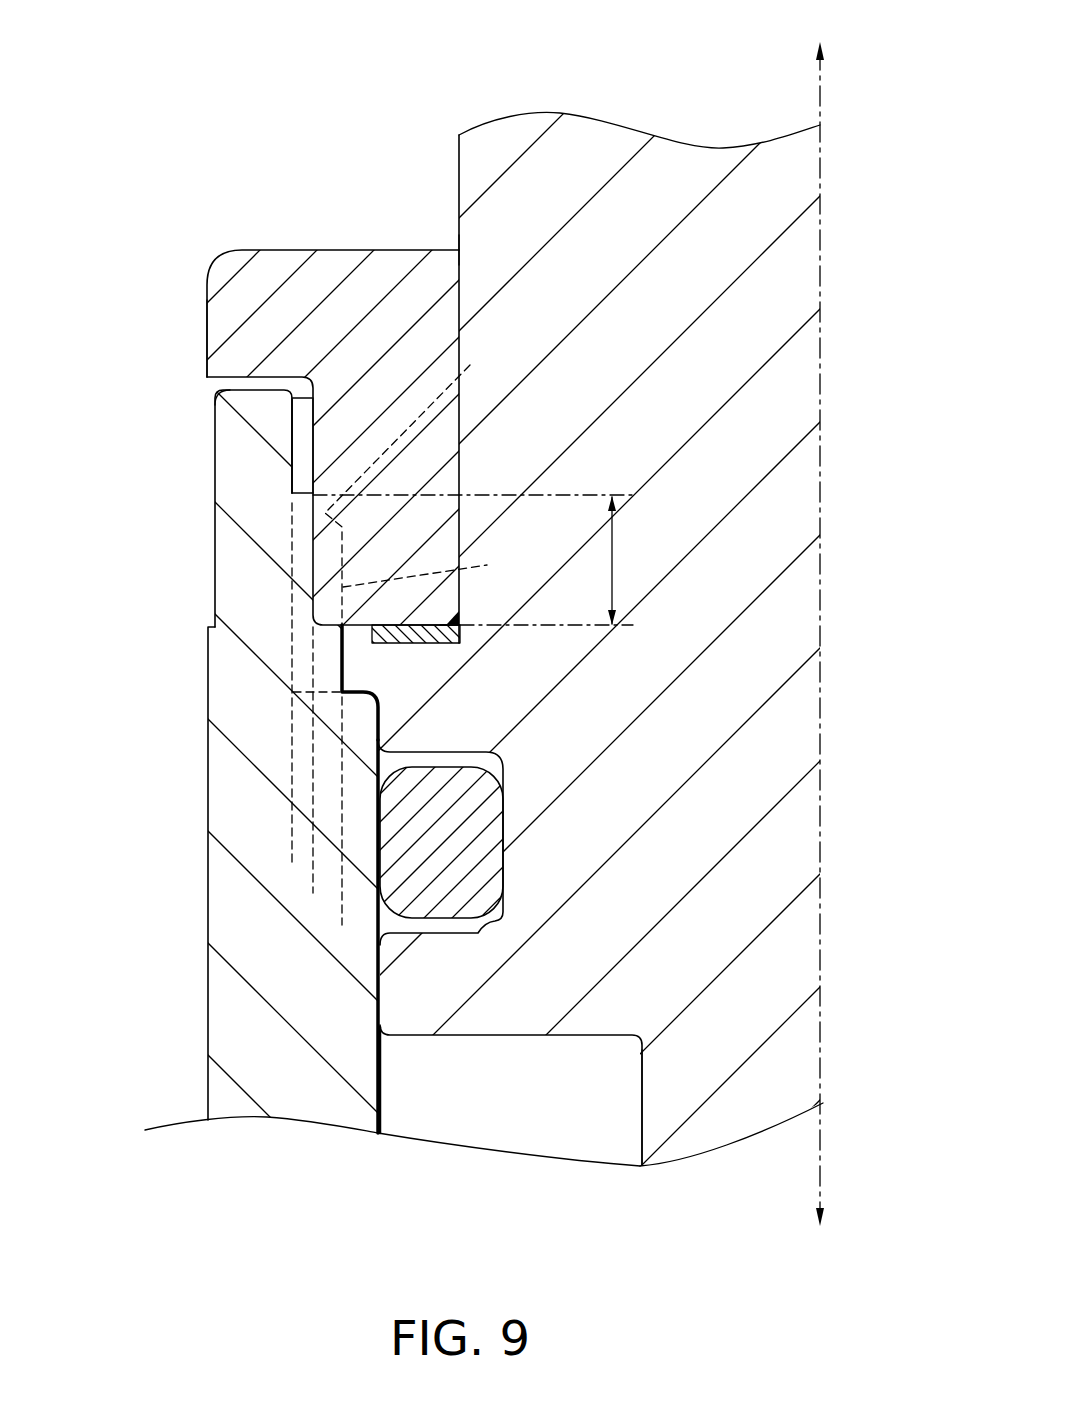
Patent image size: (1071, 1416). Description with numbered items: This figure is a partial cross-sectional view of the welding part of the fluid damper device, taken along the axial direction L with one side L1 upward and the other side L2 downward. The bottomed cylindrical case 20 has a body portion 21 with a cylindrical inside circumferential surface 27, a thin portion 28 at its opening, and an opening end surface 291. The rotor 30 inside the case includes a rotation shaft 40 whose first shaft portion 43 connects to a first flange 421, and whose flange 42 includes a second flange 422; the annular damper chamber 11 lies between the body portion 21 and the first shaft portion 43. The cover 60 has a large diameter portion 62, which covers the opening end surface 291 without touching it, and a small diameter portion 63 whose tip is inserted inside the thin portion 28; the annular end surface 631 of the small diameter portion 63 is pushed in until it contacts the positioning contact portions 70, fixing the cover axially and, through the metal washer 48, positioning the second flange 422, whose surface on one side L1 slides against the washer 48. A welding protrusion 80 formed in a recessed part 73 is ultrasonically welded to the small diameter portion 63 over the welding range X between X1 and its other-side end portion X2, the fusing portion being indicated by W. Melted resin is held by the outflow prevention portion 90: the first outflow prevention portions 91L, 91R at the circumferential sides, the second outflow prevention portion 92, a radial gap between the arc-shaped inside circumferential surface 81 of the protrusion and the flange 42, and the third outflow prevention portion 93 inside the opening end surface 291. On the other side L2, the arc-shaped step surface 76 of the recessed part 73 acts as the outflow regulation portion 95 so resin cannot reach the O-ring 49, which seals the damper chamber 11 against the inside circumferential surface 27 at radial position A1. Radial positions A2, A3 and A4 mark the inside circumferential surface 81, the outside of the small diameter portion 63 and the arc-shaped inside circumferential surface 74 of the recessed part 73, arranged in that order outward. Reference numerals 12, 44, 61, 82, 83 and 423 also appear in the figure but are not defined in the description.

The damper chamber 11 is at (510, 1095).
The housing body 12 is at (527, 1098).
The case 20 is at (535, 795).
The body portion 21 is at (535, 795).
The cylindrical inside circumferential surface 27 is at (389, 1108).
The thin portion 28 is at (170, 487).
The opening end surface 291 is at (220, 388).
The rotor 30 is at (458, 183).
The rotation shaft 40 is at (535, 650).
The flange 42 is at (387, 879).
The first flange 421 is at (378, 983).
The second flange 422 is at (384, 683).
The groove bottom 423 is at (503, 922).
The first shaft portion 43 is at (638, 1103).
The bearing holder flange 44 is at (535, 650).
The washer 48 is at (460, 631).
The O-ring 49 is at (490, 818).
The cover 60 is at (535, 650).
The seal inner corner 61 is at (461, 262).
The large diameter portion 62 is at (207, 328).
The small diameter portion 63 is at (533, 657).
The annular end surface 631 is at (533, 657).
The positioning contact portions 70 is at (458, 638).
The recessed part 73 is at (296, 426).
The arc-shaped inside circumferential surface 74 is at (206, 410).
The arc-shaped step surface 76 is at (239, 735).
The welding protrusion 80 is at (342, 677).
The arc-shaped inside circumferential surface 81 is at (236, 686).
The hidden groove 82 is at (468, 368).
The step portion 83 is at (300, 491).
The outflow prevention portion 90 is at (284, 448).
The first outflow prevention portion 91L is at (181, 509).
The first outflow prevention portion 91R is at (293, 553).
The second outflow prevention portion 92 is at (352, 653).
The third outflow prevention portion 93 is at (192, 445).
The outflow regulation portion 95 is at (362, 694).
The radial position A1 is at (364, 943).
The radial position A2 is at (330, 913).
The radial position A3 is at (301, 880).
The radial position A4 is at (280, 848).
The axial direction L is at (852, 633).
The one side L1 is at (852, 633).
The other side L2 is at (878, 330).
The fusing portion W is at (425, 569).
The welding range X is at (617, 565).
The position X1 is at (617, 495).
The other-side end portion X2 is at (620, 627).